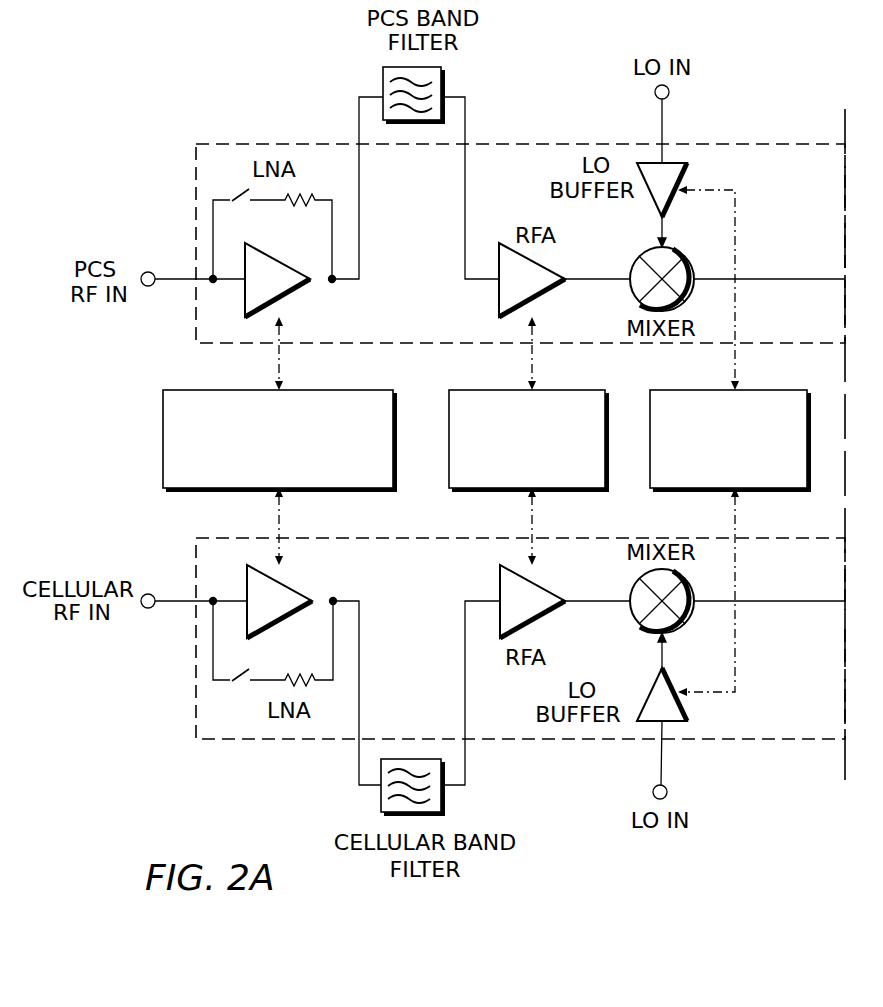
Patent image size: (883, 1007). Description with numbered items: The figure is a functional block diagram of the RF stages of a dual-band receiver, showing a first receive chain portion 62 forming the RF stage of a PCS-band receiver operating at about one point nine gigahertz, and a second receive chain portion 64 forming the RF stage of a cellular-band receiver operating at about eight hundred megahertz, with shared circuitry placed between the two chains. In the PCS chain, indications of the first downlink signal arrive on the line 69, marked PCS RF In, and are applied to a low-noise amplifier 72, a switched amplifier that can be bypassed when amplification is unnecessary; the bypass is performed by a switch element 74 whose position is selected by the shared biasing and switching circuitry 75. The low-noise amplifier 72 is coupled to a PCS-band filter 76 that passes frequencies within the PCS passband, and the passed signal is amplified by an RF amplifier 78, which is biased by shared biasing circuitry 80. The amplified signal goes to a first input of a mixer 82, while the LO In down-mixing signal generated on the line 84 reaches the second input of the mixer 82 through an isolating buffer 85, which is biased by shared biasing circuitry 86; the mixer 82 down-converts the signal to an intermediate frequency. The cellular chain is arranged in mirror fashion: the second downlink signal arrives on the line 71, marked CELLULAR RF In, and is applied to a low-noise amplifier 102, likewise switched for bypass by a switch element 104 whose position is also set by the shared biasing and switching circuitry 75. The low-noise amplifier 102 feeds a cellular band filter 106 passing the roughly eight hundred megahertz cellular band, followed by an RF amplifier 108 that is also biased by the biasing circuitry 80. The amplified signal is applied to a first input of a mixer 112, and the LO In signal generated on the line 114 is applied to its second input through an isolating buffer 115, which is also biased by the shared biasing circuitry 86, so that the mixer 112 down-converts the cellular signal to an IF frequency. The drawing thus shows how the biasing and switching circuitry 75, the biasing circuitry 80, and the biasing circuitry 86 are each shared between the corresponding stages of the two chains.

The first receive chain portion 62 is at (196, 172).
The second receive chain portion 64 is at (194, 546).
The line 69 is at (174, 278).
The line 71 is at (172, 604).
The low-noise amplifier 72 is at (259, 244).
The switch element 74 is at (234, 191).
The shared biasing and switching circuitry 75 is at (212, 390).
The PCS-band filter 76 is at (383, 74).
The RF amplifier 78 is at (499, 250).
The shared biasing circuitry 80 is at (494, 390).
The mixer 82 is at (630, 265).
The line 84 is at (664, 112).
The isolating buffer 85 is at (687, 177).
The shared biasing circuitry 86 is at (695, 390).
The low-noise amplifier 102 is at (290, 590).
The switch element 104 is at (238, 686).
The cellular band filter 106 is at (380, 807).
The RF amplifier 108 is at (538, 622).
The mixer 112 is at (632, 593).
The line 114 is at (663, 760).
The isolating buffer 115 is at (687, 706).